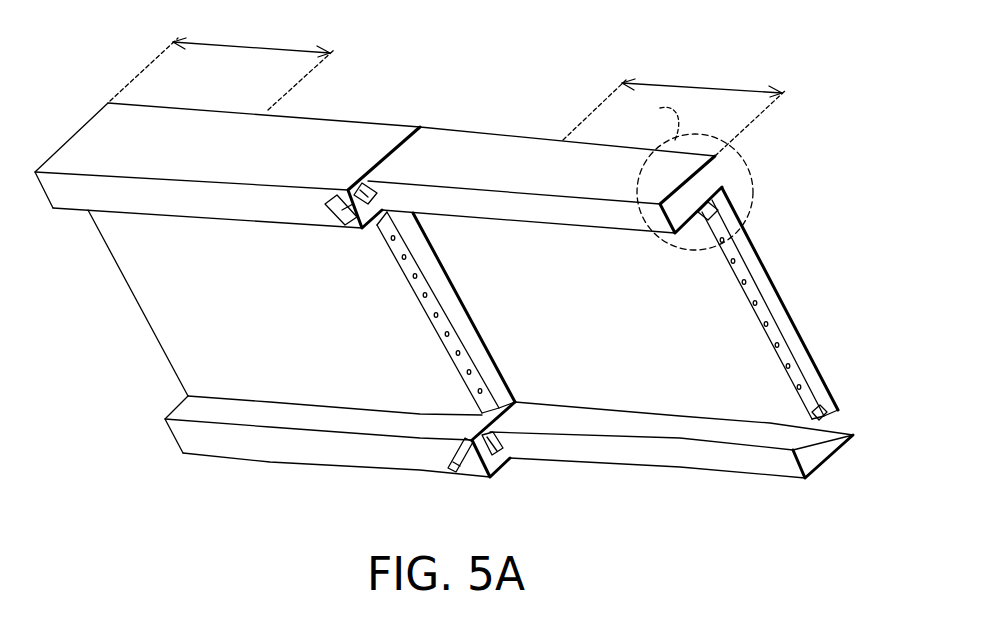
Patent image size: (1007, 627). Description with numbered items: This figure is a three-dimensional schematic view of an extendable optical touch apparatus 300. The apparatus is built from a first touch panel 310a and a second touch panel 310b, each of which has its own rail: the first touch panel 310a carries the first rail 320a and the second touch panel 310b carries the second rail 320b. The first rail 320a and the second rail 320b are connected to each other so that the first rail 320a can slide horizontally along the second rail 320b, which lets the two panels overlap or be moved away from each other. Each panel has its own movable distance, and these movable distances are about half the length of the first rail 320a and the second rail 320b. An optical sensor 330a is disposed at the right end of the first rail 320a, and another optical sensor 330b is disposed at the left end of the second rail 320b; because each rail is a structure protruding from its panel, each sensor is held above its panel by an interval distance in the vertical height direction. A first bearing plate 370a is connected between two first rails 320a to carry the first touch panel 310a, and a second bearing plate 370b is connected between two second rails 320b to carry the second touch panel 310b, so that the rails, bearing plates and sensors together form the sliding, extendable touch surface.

The optical touch apparatus 300 is at (860, 35).
The first touch panel 310a is at (163, 292).
The second touch panel 310b is at (687, 363).
The first rail 320a is at (203, 132).
The second rail 320b is at (533, 160).
The optical sensor 330a is at (340, 218).
The optical sensor 330b is at (347, 190).
The first bearing plate 370a is at (500, 372).
The second bearing plate 370b is at (782, 294).